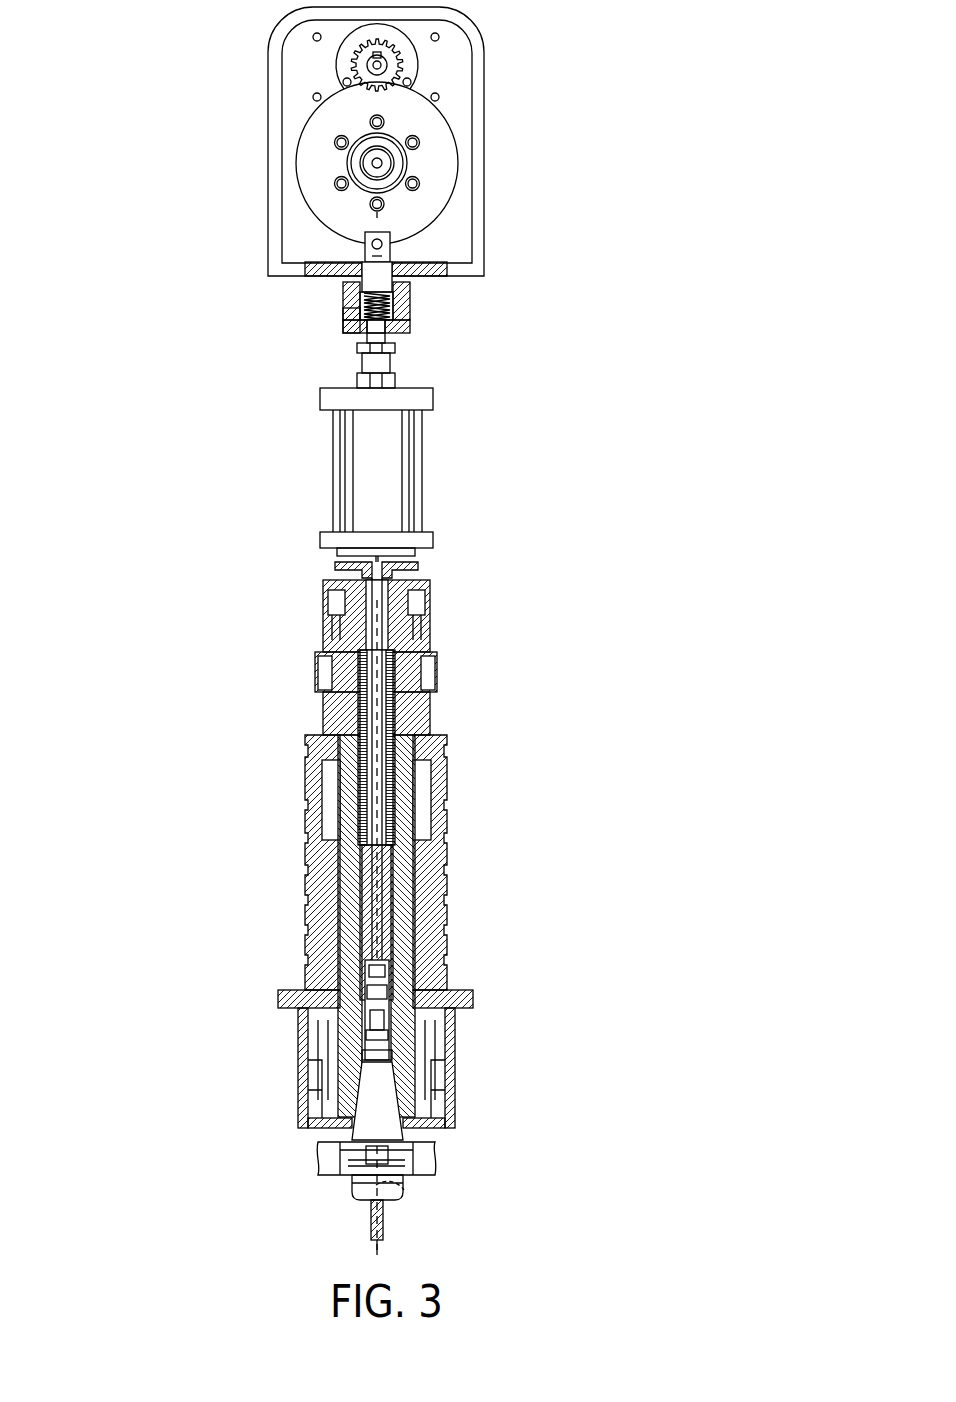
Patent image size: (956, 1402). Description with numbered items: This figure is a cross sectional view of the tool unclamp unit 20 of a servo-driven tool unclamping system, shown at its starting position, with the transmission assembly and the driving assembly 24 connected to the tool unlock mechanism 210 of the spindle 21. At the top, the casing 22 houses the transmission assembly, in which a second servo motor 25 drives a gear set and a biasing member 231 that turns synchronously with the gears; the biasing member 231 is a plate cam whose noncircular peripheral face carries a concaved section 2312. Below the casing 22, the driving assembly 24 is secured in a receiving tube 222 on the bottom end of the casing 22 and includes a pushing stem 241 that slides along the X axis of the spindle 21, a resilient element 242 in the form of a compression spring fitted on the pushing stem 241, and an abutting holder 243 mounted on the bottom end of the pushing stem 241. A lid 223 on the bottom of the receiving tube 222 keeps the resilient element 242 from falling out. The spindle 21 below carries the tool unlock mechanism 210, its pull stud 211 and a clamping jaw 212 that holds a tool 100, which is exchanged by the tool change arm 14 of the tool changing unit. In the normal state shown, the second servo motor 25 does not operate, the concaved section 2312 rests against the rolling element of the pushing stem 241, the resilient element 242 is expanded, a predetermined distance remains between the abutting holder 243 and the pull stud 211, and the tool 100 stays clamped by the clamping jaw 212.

The tool unclamp unit 20 is at (196, 760).
The spindle 21 is at (463, 888).
The casing 22 is at (485, 194).
The driving assembly 24 is at (340, 355).
The second servo motor 25 is at (440, 52).
The tool change arm 14 is at (425, 1155).
The tool 100 is at (370, 1218).
The tool unlock mechanism 210 is at (347, 878).
The pull stud 211 is at (337, 565).
The clamping jaw 212 is at (386, 1034).
The receiving tube 222 is at (413, 302).
The lid 223 is at (413, 328).
The biasing member 231 is at (447, 143).
The pushing stem 241 is at (412, 282).
The resilient element 242 is at (345, 315).
The abutting holder 243 is at (335, 470).
The concaved section 2312 is at (377, 233).
The X axis X is at (405, 1190).